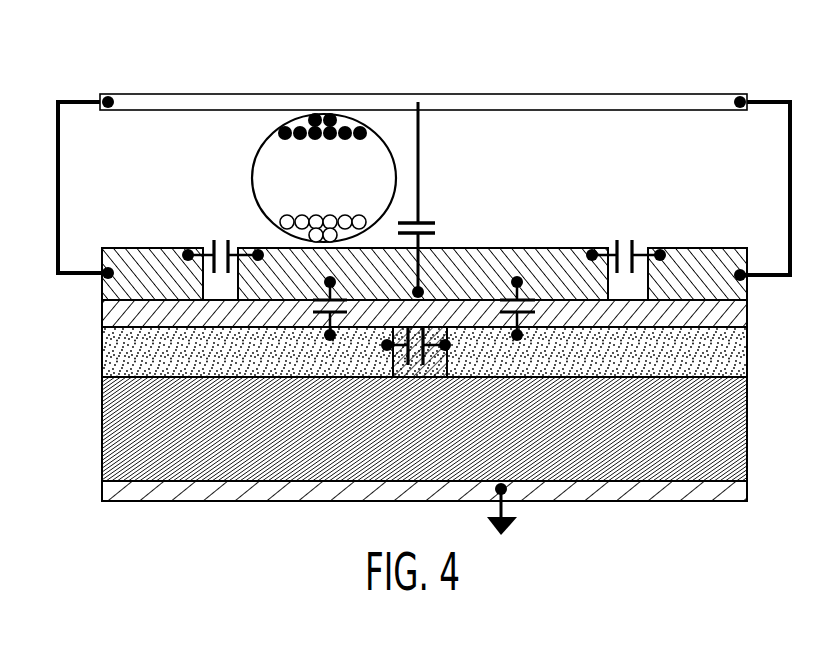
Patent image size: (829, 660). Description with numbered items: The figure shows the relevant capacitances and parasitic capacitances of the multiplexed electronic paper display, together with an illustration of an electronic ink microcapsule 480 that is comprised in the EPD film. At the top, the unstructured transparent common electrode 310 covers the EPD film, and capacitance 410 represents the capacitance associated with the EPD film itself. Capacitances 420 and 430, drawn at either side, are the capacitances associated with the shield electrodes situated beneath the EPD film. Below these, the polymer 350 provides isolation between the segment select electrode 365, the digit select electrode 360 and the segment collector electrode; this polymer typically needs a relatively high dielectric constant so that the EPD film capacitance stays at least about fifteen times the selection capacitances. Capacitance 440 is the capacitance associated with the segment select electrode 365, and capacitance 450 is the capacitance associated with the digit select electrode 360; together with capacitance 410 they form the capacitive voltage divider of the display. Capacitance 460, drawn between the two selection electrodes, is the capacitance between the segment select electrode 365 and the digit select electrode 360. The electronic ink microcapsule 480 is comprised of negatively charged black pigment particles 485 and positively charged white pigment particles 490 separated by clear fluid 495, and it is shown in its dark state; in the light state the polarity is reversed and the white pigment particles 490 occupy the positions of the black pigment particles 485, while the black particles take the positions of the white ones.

The common electrode 310 is at (137, 93).
The polymer 350 is at (747, 315).
The digit select electrode 360 is at (747, 367).
The segment select electrode 365 is at (102, 365).
The capacitance 410 is at (434, 211).
The capacitance 420 is at (637, 240).
The capacitance 430 is at (213, 243).
The capacitance 440 is at (312, 312).
The capacitance 450 is at (540, 293).
The capacitance 460 is at (408, 367).
The electronic ink microcapsule 480 is at (347, 118).
The negatively charged black pigment particles 485 is at (288, 123).
The positively charged white pigment particles 490 is at (253, 190).
The clear fluid 495 is at (263, 169).